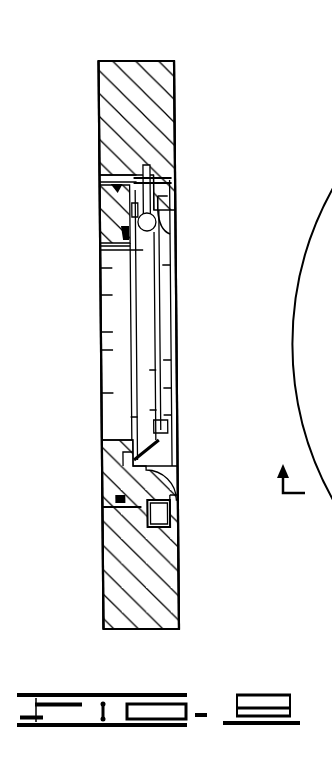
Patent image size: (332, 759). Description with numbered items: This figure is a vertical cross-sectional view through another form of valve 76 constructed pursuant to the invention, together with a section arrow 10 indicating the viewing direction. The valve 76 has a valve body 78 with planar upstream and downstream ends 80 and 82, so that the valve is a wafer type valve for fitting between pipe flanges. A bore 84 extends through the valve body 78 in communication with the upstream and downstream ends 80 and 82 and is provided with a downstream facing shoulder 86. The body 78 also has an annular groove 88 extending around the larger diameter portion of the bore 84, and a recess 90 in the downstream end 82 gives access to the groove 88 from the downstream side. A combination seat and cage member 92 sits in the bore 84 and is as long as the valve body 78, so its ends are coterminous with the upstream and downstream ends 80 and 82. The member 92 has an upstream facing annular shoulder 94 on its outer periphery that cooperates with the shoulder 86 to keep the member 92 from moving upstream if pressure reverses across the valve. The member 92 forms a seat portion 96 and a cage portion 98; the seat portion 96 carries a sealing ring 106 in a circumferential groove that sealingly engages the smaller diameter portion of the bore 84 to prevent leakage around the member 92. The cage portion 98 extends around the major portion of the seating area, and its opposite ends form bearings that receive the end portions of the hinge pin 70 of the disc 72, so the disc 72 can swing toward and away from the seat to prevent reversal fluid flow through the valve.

The section view direction arrow 10 is at (301, 344).
The hinge pin 70 is at (150, 221).
The disc 72 is at (160, 341).
The valve 76 is at (93, 55).
The valve body 78 is at (138, 76).
The upstream end 80 is at (98, 108).
The downstream end 82 is at (175, 105).
The bore 84 is at (158, 175).
The downstream facing shoulder 86 is at (132, 180).
The annular groove 88 is at (152, 193).
The recess 90 is at (170, 519).
The combination seat and cage member 92 is at (90, 213).
The annular shoulder 94 is at (127, 513).
The seat portion 96 is at (105, 463).
The cage portion 98 is at (142, 472).
The sealing ring 106 is at (118, 497).